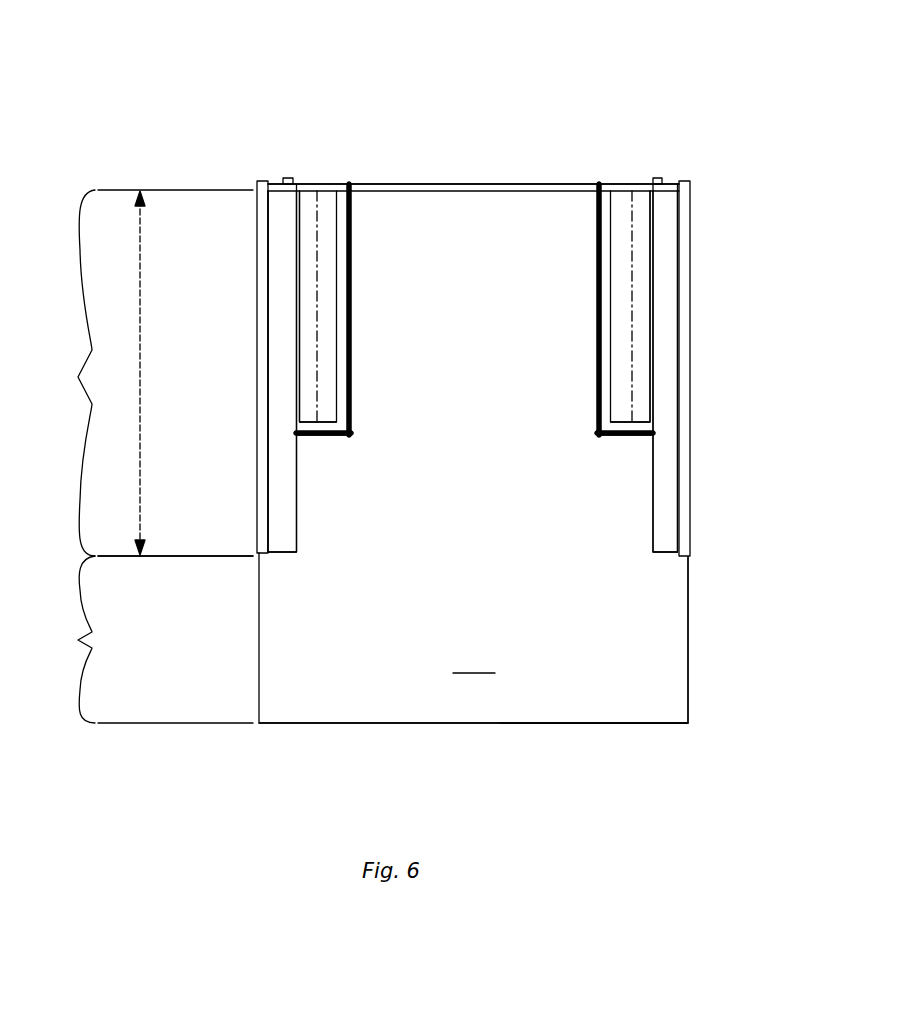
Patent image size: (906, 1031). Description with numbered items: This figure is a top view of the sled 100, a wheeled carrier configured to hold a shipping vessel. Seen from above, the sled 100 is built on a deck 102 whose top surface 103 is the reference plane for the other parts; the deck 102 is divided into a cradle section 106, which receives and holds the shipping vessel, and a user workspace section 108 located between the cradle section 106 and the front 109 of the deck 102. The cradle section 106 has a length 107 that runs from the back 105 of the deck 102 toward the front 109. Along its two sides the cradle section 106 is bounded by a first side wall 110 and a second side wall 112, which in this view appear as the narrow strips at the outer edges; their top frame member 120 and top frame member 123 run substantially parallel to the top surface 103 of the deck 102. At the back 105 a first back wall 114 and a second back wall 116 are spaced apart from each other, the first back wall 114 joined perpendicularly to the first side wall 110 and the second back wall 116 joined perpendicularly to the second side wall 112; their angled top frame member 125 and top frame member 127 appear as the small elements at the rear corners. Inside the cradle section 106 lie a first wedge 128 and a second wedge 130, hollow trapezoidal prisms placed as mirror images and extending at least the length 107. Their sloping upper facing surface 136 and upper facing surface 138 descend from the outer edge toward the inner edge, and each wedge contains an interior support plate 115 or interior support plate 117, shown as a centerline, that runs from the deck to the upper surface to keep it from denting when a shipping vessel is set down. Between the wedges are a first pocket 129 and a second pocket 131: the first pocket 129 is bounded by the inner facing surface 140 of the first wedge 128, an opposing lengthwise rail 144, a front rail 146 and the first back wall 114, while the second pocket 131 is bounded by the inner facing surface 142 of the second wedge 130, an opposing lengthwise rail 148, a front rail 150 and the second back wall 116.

The sled 100 is at (528, 82).
The deck 102 is at (570, 728).
The top surface 103 is at (473, 638).
The back 105 is at (448, 183).
The cradle section 106 is at (141, 373).
The length 107 is at (141, 373).
The user workspace section 108 is at (141, 639).
The front 109 is at (435, 724).
The first side wall 110 is at (254, 300).
The second side wall 112 is at (695, 303).
The first back wall 114 is at (309, 183).
The interior support plate 115 is at (300, 416).
The second back wall 116 is at (673, 181).
The interior support plate 117 is at (640, 412).
The top frame member 120 is at (258, 370).
The top frame member 123 is at (690, 375).
The top frame member 125 is at (275, 183).
The top frame member 127 is at (633, 183).
The first wedge 128 is at (300, 508).
The first pocket 129 is at (314, 320).
The second wedge 130 is at (648, 497).
The second pocket 131 is at (636, 323).
The upper facing surface 136 is at (277, 290).
The upper facing surface 138 is at (665, 280).
The inner facing surface 140 is at (297, 398).
The inner facing surface 142 is at (650, 378).
The lengthwise rail 144 is at (350, 330).
The front rail 146 is at (323, 436).
The lengthwise rail 148 is at (598, 365).
The front rail 150 is at (630, 436).